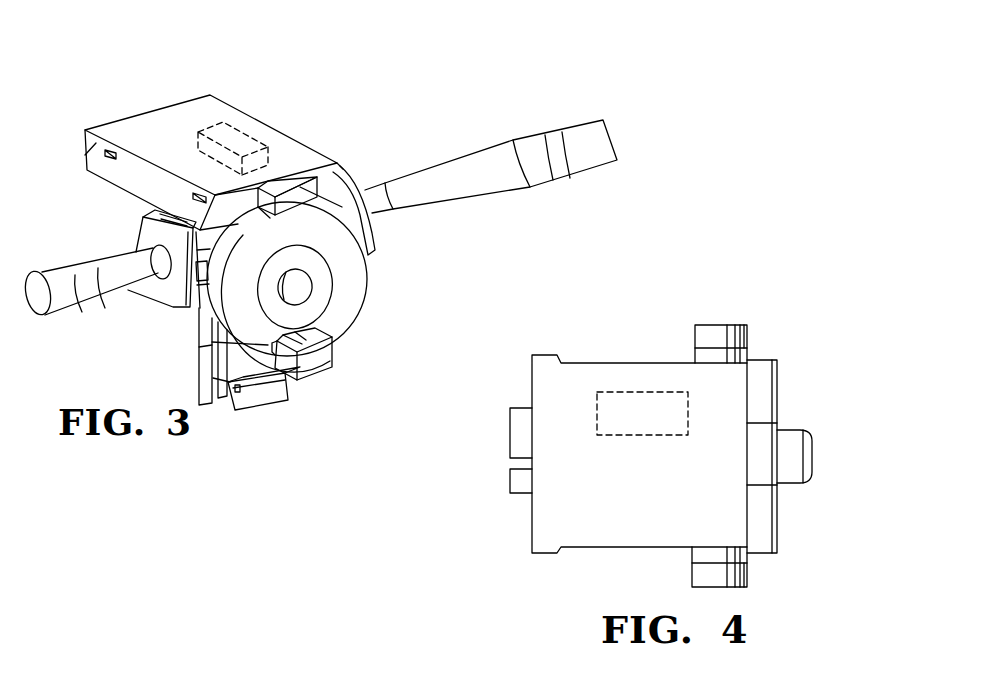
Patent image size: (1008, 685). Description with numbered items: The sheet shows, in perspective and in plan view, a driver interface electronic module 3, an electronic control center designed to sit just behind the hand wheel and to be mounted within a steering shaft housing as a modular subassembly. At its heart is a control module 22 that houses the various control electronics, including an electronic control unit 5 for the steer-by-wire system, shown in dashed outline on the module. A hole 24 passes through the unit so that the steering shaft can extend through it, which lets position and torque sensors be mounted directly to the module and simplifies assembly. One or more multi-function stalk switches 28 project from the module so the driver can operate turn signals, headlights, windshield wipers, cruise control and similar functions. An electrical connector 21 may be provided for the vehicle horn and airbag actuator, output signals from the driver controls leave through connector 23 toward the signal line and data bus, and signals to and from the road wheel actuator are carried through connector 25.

In FIG. 3, the driver interface electronic module 3 is at (83, 125).
In FIG. 4, the driver interface electronic module 3 is at (526, 352).
In FIG. 3, the electronic control unit 5 is at (234, 132).
In FIG. 4, the electronic control unit 5 is at (652, 392).
In FIG. 3, the electrical connector 21 is at (280, 393).
In FIG. 3, the control module 22 is at (320, 148).
In FIG. 4, the control module 22 is at (656, 487).
In FIG. 4, the connector 23 is at (516, 488).
In FIG. 3, the hole 24 is at (300, 292).
In FIG. 4, the connector 25 is at (518, 435).
In FIG. 3, the multi-function stalk switch 28 is at (66, 272).